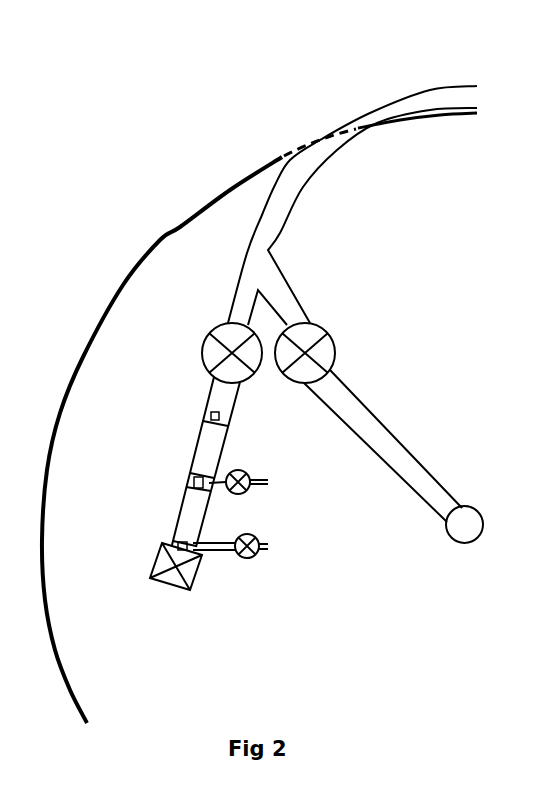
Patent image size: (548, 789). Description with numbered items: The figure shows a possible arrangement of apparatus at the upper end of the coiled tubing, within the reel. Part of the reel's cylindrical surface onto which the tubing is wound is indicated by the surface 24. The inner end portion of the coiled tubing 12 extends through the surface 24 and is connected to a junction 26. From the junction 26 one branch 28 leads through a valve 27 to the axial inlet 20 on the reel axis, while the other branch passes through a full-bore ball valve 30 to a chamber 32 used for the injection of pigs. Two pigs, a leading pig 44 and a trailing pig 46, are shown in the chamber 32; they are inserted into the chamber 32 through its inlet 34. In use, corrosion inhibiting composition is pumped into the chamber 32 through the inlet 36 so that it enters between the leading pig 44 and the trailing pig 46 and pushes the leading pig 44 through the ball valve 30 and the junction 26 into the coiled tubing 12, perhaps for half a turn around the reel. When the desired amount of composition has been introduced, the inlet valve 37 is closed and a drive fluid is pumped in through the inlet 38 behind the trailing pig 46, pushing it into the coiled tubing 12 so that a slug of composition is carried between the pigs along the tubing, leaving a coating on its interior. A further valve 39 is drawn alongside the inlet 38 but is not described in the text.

The coiled tubing 12 is at (447, 90).
The axial inlet 20 is at (468, 532).
The reel cylindrical surface 24 is at (124, 286).
The junction 26 is at (252, 269).
The valve 27 is at (328, 346).
The branch 28 is at (408, 465).
The full-bore ball valve 30 is at (207, 350).
The chamber 32 is at (235, 408).
The inlet 34 is at (175, 590).
The inlet 36 is at (262, 485).
The inlet valve 37 is at (250, 492).
The inlet 38 is at (222, 550).
The valve 39 is at (252, 557).
The leading pig 44 is at (210, 444).
The trailing pig 46 is at (192, 512).